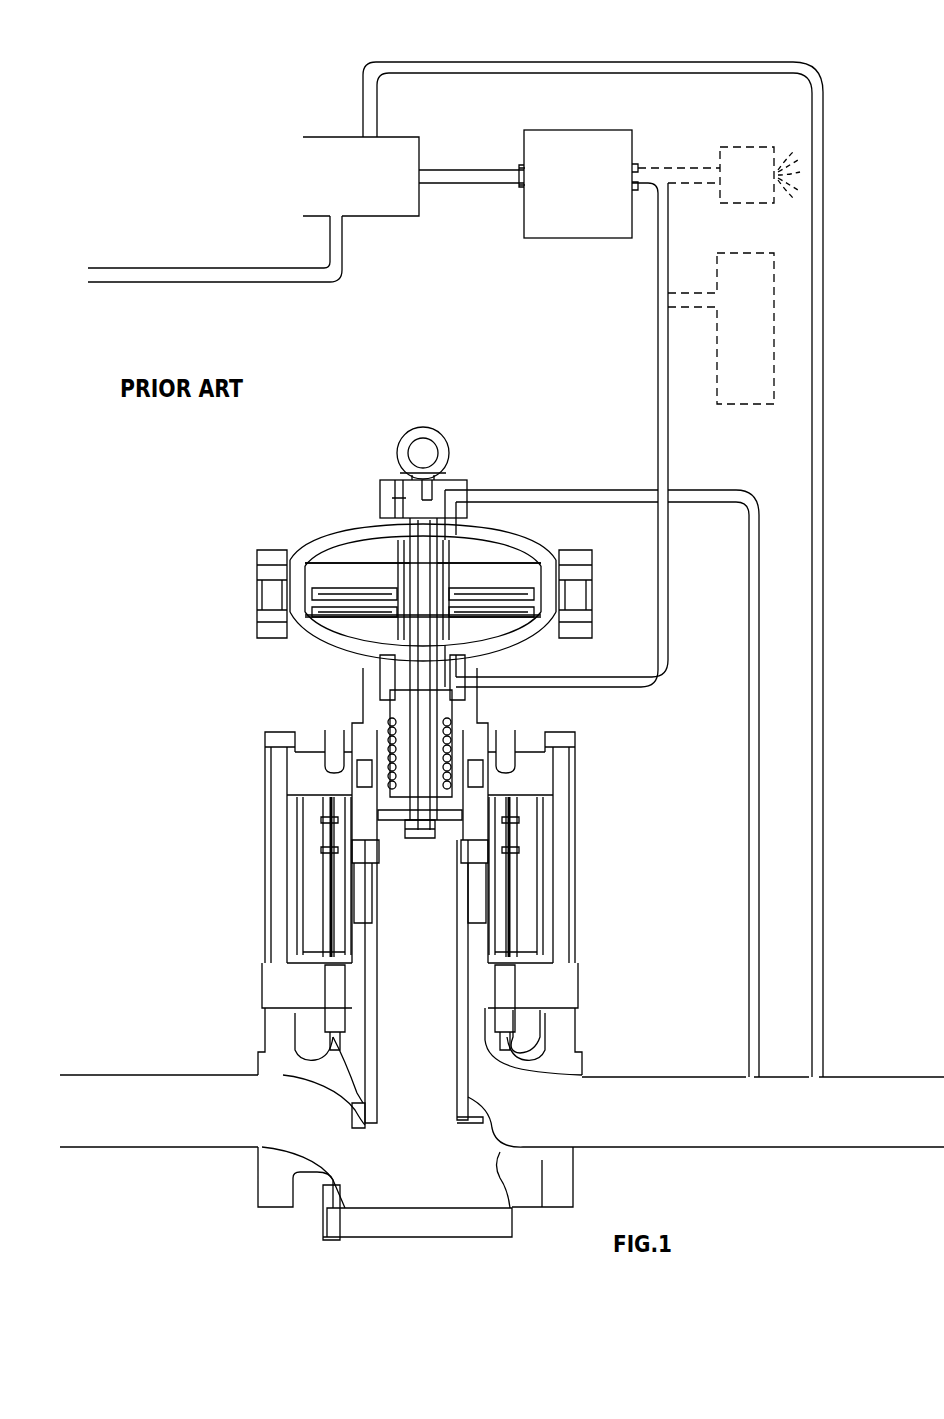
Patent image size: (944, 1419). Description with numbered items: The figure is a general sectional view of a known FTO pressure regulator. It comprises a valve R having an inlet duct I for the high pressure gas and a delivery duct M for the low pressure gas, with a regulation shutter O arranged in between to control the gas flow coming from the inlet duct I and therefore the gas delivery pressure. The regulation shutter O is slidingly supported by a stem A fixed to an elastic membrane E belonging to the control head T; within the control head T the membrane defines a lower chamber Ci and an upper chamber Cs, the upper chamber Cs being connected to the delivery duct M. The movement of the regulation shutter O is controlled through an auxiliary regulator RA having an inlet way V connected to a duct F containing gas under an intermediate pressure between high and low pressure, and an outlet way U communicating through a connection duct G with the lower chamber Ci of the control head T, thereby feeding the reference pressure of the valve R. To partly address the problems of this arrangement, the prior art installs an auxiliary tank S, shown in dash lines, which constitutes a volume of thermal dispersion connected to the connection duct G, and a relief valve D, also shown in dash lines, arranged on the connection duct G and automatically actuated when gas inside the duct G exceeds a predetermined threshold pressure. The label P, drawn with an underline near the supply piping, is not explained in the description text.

The auxiliary regulator RA is at (533, 110).
The duct F is at (458, 176).
The supply pipe / pressure source P is at (452, 287).
The inlet way V is at (521, 160).
The outlet way U is at (636, 166).
The relief valve D is at (745, 145).
The auxiliary tank S is at (745, 250).
The connection duct G is at (658, 400).
The control head T is at (366, 500).
The elastic membrane E is at (309, 600).
The upper chamber Cs is at (492, 582).
The lower chamber Ci is at (493, 631).
The stem A is at (418, 788).
The regulation shutter O is at (482, 827).
The valve R is at (353, 954).
The inlet duct I is at (150, 1063).
The delivery duct M is at (620, 1062).